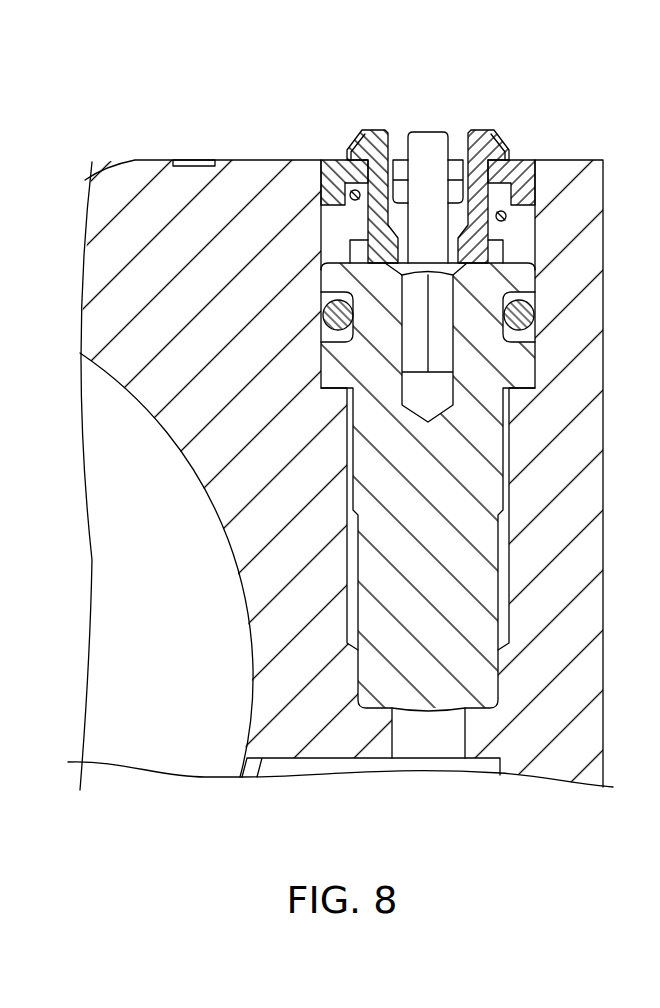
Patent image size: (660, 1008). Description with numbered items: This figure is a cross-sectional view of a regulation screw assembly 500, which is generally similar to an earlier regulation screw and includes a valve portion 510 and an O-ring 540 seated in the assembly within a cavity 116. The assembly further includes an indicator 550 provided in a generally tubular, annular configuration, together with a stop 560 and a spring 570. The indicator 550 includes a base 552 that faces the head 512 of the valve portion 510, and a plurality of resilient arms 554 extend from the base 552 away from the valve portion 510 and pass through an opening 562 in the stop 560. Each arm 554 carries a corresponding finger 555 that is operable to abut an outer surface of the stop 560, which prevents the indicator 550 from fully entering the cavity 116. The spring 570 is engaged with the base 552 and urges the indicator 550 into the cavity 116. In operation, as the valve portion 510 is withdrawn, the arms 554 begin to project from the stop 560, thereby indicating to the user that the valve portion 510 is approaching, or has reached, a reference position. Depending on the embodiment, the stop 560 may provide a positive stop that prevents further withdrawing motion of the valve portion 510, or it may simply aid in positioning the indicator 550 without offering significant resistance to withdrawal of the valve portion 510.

The regulation screw assembly 500 is at (401, 46).
The cavity 116 is at (320, 102).
The indicator 550 is at (484, 102).
The resilient arms 554 is at (396, 200).
The stop 560 is at (530, 162).
The finger 555 is at (352, 137).
The opening 562 is at (389, 214).
The spring 570 is at (513, 212).
The base 552 is at (508, 250).
The head 512 is at (327, 265).
The O-ring 540 is at (324, 314).
The valve portion 510 is at (360, 460).